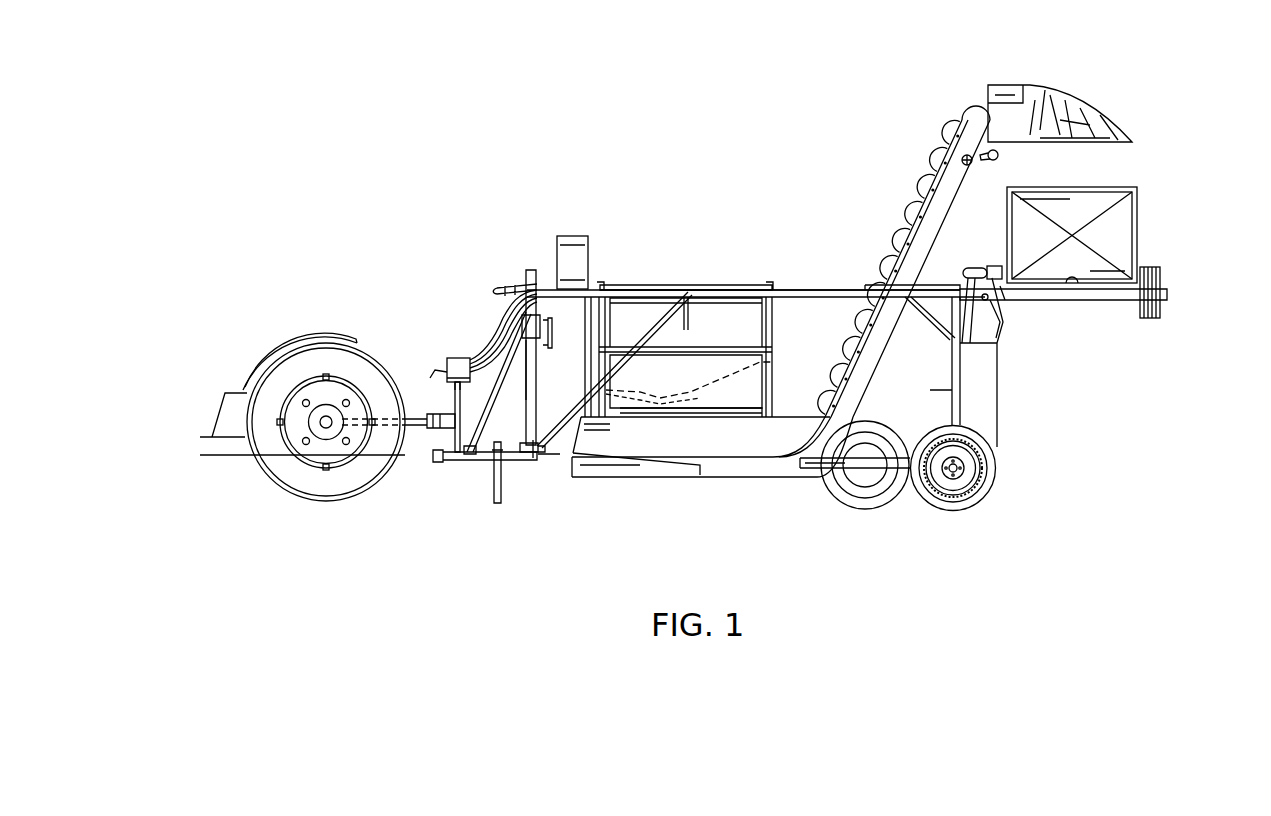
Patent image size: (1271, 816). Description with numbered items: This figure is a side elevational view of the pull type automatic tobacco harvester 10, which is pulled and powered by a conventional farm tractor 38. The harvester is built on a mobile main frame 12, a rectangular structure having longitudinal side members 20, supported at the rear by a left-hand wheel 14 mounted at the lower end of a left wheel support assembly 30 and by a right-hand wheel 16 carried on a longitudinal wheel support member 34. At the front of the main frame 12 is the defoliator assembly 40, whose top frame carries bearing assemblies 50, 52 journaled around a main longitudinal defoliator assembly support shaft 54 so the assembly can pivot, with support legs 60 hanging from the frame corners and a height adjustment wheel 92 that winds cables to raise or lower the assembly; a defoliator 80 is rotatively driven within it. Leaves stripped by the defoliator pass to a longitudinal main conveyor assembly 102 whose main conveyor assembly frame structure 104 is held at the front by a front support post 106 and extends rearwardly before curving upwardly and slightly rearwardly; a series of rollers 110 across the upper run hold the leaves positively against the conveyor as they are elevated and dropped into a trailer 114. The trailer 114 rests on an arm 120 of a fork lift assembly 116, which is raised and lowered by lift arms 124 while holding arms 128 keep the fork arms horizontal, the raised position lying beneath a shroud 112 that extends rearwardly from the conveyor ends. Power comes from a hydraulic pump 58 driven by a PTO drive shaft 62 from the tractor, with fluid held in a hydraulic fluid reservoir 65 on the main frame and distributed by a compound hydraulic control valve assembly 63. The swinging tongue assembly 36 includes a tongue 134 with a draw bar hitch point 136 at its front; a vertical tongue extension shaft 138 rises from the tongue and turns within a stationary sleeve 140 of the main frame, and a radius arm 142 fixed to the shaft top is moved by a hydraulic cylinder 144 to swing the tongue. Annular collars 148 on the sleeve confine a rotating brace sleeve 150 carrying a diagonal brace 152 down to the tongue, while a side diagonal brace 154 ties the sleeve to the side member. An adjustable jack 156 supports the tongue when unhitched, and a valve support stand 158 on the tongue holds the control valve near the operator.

The pull type automatic tobacco harvester 10 is at (764, 125).
The main frame 12 is at (838, 278).
The left-hand wheel 14 is at (990, 470).
The right-hand wheel 16 is at (890, 482).
The longitudinal side member 20 is at (580, 297).
The left wheel support assembly 30 is at (960, 382).
The longitudinal wheel support member 34 is at (858, 470).
The swinging tongue assembly 36 is at (533, 478).
The farm tractor 38 is at (232, 395).
The defoliator assembly 40 is at (784, 361).
The bearing assembly 50 is at (610, 295).
The bearing assembly 52 is at (772, 285).
The main longitudinal defoliator assembly support shaft 54 is at (720, 285).
The hydraulic pump 58 is at (432, 434).
The support leg 60 is at (603, 330).
The PTO drive shaft 62 is at (405, 400).
The compound hydraulic control valve assembly 63 is at (452, 358).
The hydraulic fluid reservoir 65 is at (577, 244).
The defoliator 80 is at (780, 370).
The height adjustment wheel 92 is at (686, 288).
The longitudinal main conveyor assembly 102 is at (735, 500).
The main conveyor assembly frame structure 104 is at (662, 468).
The front support post 106 is at (580, 385).
The rollers 110 is at (922, 205).
The shroud 112 is at (1100, 102).
The trailer 114 is at (1125, 228).
The fork lift assembly 116 is at (1140, 308).
The arm 120 is at (1118, 300).
The lift arm 124 is at (1000, 330).
The holding arm 128 is at (958, 275).
The tongue 134 is at (484, 435).
The draw bar hitch point 136 is at (456, 454).
The vertical tongue extension shaft 138 is at (530, 268).
The stationary sleeve 140 is at (540, 462).
The radius arm 142 is at (510, 286).
The hydraulic cylinder 144 is at (490, 325).
The annular collar 148 is at (580, 332).
The brace sleeve 150 is at (524, 380).
The diagonal brace 152 is at (472, 452).
The side diagonal brace 154 is at (637, 357).
The adjustable jack 156 is at (497, 504).
The valve support stand 158 is at (470, 462).